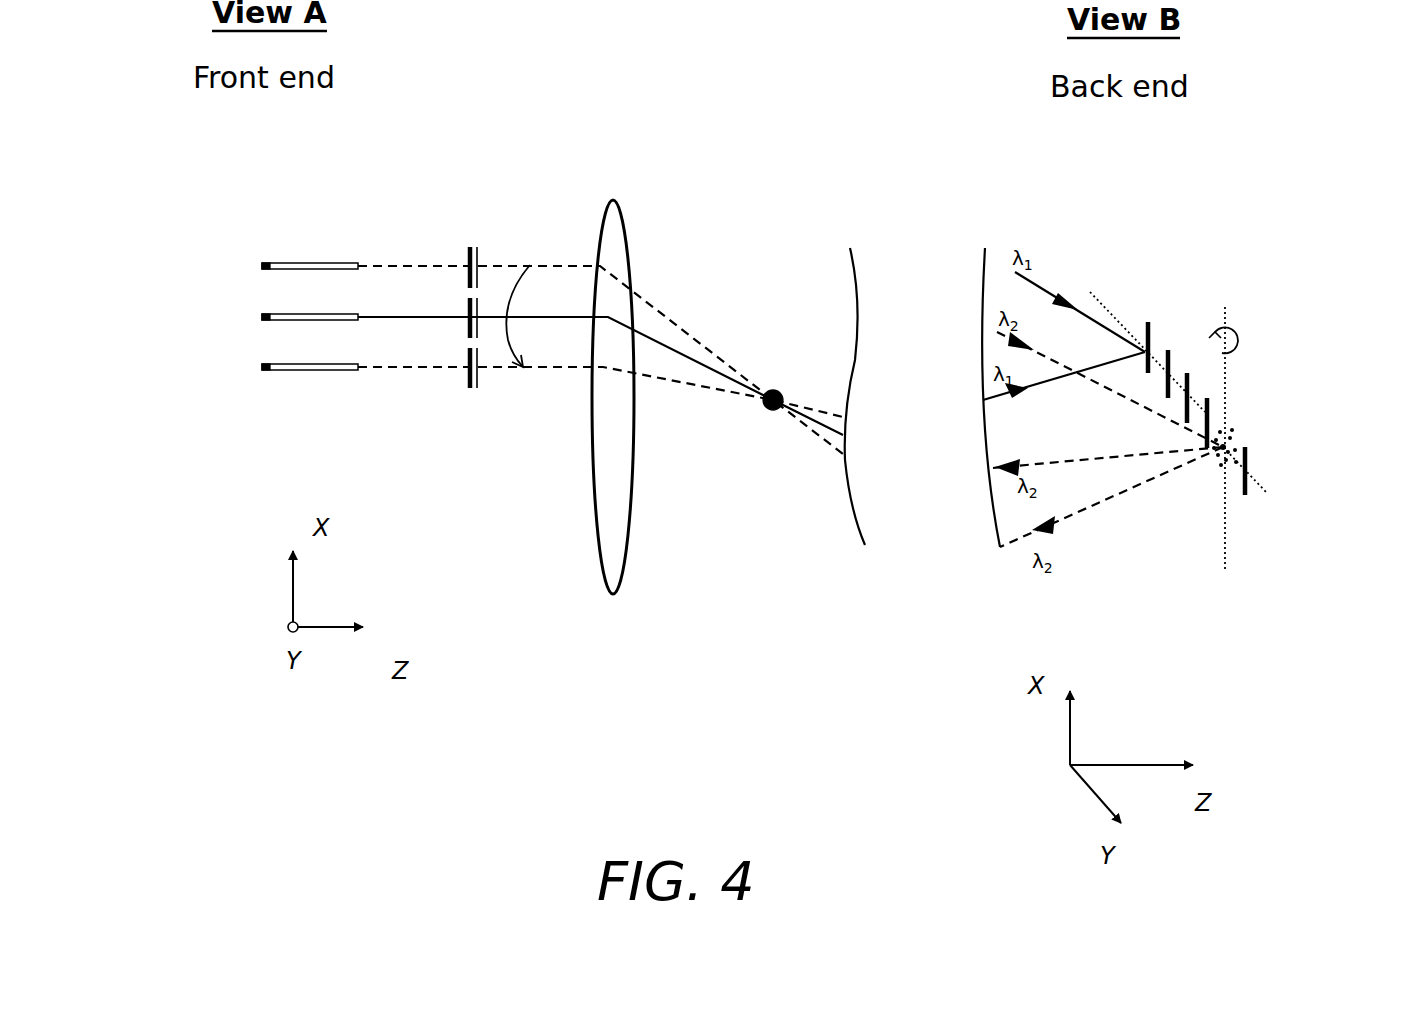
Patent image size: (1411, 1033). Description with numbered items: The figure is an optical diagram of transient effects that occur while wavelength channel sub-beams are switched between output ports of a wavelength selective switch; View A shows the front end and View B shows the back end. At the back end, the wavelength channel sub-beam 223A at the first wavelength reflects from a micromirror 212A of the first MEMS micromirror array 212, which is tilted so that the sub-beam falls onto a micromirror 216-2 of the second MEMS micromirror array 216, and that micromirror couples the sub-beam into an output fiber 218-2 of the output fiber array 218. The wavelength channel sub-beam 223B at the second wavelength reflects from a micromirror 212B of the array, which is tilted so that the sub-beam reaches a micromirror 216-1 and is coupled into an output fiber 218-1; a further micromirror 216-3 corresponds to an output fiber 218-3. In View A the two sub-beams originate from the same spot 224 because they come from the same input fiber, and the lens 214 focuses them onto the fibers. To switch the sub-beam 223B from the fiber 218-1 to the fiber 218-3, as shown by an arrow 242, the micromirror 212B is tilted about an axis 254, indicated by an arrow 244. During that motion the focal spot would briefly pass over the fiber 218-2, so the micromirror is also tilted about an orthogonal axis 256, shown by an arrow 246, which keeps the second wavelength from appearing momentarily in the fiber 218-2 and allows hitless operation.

The first MEMS micromirror array 212 is at (1231, 387).
The micromirror 212A is at (1149, 320).
The micromirror 212B is at (1218, 465).
The lens 214 is at (600, 557).
The second MEMS micromirror array 216 is at (447, 407).
The micromirror 216-1 is at (477, 255).
The micromirror 216-2 is at (467, 303).
The micromirror 216-3 is at (467, 357).
The output fiber array 218 is at (283, 415).
The output fiber 218-1 is at (262, 266).
The output fiber 218-2 is at (262, 317).
The output fiber 218-3 is at (262, 367).
The wavelength channel sub-beam 223A is at (657, 342).
The wavelength channel sub-beam 223B is at (707, 348).
The spot 224 is at (777, 390).
The arrow 242 is at (507, 345).
The arrow 244 is at (1223, 392).
The arrow 246 is at (1237, 327).
The axis 254 is at (1102, 298).
The axis 256 is at (1225, 560).